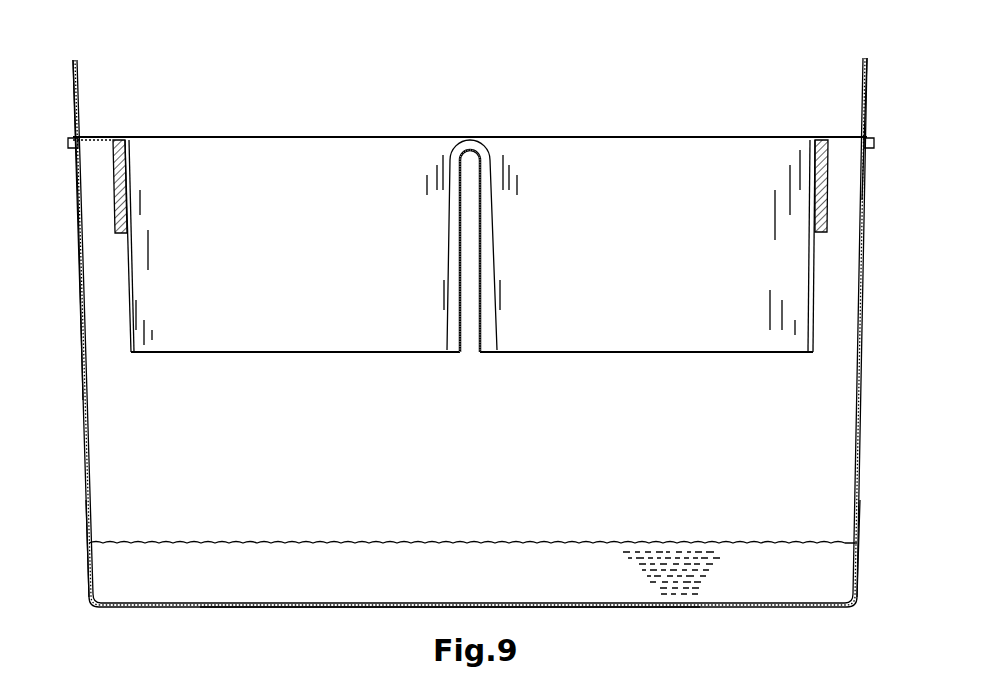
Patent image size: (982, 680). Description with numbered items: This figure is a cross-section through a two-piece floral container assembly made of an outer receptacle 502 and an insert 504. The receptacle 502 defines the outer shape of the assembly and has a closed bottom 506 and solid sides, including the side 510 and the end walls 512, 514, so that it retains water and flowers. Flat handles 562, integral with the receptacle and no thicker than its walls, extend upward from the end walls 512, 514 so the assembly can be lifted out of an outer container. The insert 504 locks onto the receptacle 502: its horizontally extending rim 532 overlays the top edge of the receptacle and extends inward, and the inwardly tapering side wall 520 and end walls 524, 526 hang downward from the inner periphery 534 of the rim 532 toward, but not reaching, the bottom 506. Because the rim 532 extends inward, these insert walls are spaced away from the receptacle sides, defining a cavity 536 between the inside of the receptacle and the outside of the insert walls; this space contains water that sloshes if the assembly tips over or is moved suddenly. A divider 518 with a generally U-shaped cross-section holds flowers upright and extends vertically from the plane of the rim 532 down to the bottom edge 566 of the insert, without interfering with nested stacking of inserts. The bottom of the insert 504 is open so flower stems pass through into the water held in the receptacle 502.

The outer receptacle 502 is at (585, 607).
The insert 504 is at (675, 137).
The bottom 506 is at (258, 607).
The side 510 is at (450, 480).
The end wall 512 is at (88, 535).
The end wall 514 is at (857, 525).
The divider 518 is at (482, 236).
The side wall 520 is at (476, 273).
The end wall 524 is at (809, 272).
The end wall 526 is at (130, 275).
The rim 532 is at (107, 135).
The inner periphery 534 is at (122, 140).
The cavity 536 is at (110, 310).
The handles 562 is at (75, 72).
The bottom edge 566 is at (245, 352).